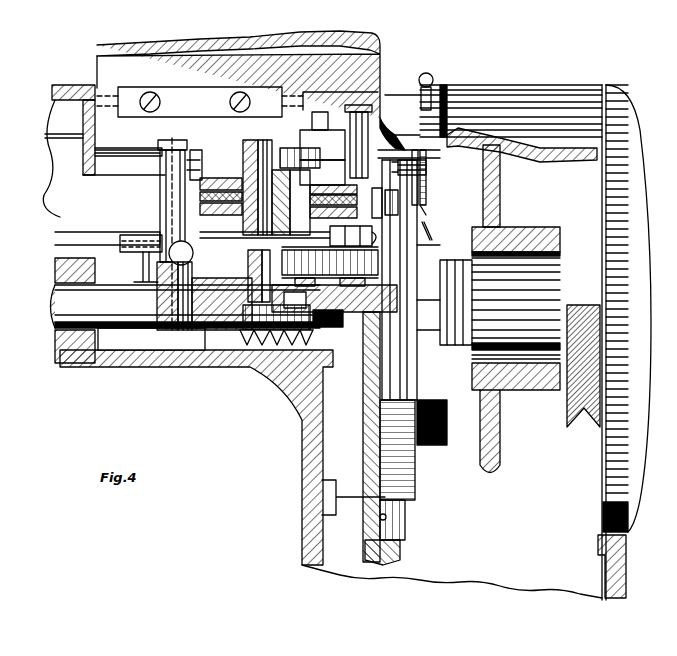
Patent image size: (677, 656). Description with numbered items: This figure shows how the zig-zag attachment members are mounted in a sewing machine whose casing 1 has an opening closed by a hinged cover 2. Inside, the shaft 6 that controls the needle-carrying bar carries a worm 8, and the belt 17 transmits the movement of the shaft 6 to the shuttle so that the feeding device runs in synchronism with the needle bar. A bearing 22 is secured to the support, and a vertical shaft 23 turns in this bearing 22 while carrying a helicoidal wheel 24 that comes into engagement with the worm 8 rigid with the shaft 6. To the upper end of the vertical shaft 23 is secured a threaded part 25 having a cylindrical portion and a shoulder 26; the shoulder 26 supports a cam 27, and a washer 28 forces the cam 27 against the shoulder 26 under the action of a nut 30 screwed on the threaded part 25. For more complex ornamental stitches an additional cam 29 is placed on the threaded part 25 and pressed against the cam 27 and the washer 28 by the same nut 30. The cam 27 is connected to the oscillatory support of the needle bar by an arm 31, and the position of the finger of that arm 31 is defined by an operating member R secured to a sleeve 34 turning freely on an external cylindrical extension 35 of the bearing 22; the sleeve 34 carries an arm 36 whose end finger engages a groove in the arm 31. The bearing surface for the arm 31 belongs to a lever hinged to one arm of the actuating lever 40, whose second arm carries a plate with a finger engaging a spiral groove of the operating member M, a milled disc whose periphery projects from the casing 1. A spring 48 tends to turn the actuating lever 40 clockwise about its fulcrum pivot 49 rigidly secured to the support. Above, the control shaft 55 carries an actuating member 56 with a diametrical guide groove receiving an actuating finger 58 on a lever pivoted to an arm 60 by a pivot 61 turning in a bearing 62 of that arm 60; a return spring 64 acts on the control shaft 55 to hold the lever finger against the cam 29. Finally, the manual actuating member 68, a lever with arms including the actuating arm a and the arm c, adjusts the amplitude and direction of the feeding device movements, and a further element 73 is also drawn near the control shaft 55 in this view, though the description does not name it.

The casing 1 is at (535, 86).
The hinged cover 2 is at (218, 44).
The shaft 6 is at (55, 300).
The worm 8 is at (245, 360).
The belt 17 is at (365, 540).
The bearing 22 is at (205, 327).
The vertical shaft 23 is at (250, 140).
The helicoidal wheel 24 is at (242, 325).
The threaded part 25 is at (240, 140).
The shoulder 26 is at (212, 216).
The cam 27 is at (350, 213).
The washer 28 is at (350, 198).
The cam 29 is at (345, 185).
The nut 30 is at (290, 148).
The arm 31 is at (90, 232).
The sleeve 34 is at (334, 306).
The external cylindrical extension 35 is at (261, 276).
The arm 36 is at (142, 268).
The actuating lever 40 is at (262, 234).
The spring 48 is at (120, 152).
The fulcrum pivot 49 is at (172, 145).
The control shaft 55 is at (405, 512).
The actuating member 56 is at (390, 203).
The actuating finger 58 is at (426, 184).
The arm 60 is at (322, 148).
The pivot 61 is at (356, 105).
The bearing 62 is at (395, 142).
The return spring 64 is at (415, 468).
The manual actuating member 68 is at (414, 302).
The roller 73 is at (426, 160).
The operating member M is at (378, 257).
The actuating arm a is at (428, 212).
The arm c is at (430, 232).